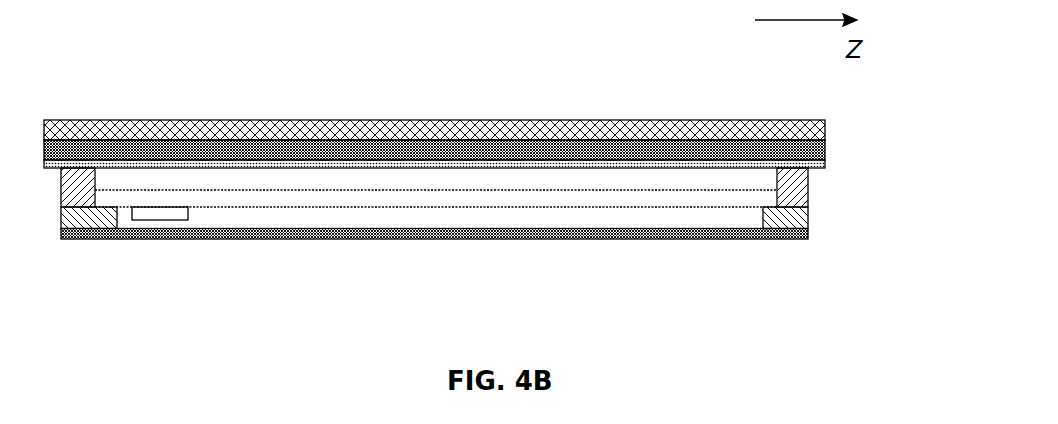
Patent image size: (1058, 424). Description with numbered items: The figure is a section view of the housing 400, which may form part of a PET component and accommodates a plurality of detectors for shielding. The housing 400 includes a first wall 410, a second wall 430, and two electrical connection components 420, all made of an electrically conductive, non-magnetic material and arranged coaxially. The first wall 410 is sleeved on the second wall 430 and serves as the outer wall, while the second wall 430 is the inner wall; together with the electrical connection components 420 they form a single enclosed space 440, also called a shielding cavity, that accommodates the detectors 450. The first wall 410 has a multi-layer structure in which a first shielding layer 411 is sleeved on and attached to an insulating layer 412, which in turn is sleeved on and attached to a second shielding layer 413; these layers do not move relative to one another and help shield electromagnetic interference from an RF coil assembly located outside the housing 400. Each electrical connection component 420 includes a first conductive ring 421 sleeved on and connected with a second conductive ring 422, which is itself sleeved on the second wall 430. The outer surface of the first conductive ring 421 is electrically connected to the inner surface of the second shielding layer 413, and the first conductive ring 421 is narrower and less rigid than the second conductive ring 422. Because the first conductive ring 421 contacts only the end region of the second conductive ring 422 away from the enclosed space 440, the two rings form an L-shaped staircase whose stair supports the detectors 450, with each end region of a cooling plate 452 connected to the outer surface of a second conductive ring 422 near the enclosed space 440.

The housing 400 is at (181, 44).
The first wall 410 is at (501, 151).
The first shielding layer 411 is at (818, 131).
The insulating layer 412 is at (822, 144).
The second shielding layer 413 is at (818, 163).
The electrical connection component 420 is at (510, 210).
The first conductive ring 421 is at (793, 195).
The second conductive ring 422 is at (795, 222).
The second wall 430 is at (413, 240).
The enclosed space 440 is at (540, 177).
The detector 450 is at (157, 215).
The cooling plate 452 is at (232, 200).